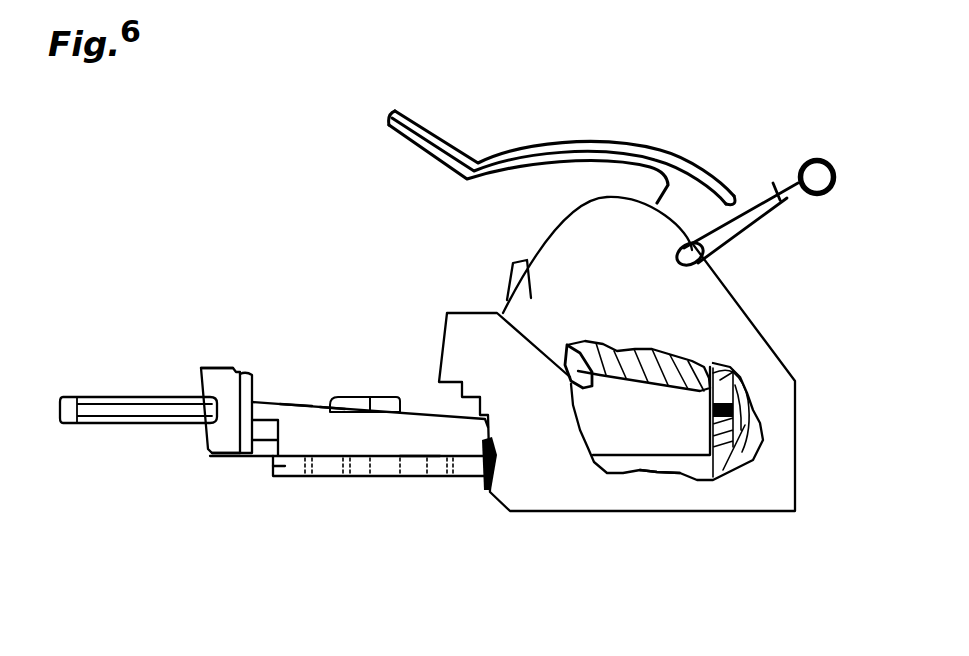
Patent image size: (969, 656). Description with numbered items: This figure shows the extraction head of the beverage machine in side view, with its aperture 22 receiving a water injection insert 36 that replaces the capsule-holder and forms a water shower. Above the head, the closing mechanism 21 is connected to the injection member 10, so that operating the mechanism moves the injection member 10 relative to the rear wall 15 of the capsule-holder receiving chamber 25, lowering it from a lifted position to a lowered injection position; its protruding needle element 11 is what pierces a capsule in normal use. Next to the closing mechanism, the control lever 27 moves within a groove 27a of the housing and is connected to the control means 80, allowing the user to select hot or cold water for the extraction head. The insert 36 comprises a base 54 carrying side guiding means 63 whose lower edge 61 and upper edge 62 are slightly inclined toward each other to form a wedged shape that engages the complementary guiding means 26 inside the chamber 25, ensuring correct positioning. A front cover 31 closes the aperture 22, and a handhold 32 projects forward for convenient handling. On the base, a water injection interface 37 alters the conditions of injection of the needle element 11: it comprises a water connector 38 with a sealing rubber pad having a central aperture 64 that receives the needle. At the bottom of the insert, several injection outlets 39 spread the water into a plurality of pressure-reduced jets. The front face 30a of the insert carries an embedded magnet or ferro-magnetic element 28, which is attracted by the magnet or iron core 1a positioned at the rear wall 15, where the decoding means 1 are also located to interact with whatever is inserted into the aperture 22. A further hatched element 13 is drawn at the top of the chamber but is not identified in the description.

The decoding means 1 is at (763, 447).
The magnet or iron core 1a is at (745, 398).
The injection member 10 is at (690, 363).
The needle element 11 is at (500, 313).
The hatched cap 13 is at (438, 343).
The rear wall 15 is at (735, 405).
The closing mechanism 21 is at (543, 148).
The aperture 22 is at (483, 417).
The capsule-holder receiving chamber 25 is at (628, 433).
The complementary guiding means 26 is at (662, 457).
The control lever 27 is at (777, 192).
The groove 27a is at (688, 245).
The magnet or ferro-magnetic element 28 is at (473, 463).
The front face 30a is at (483, 440).
The front cover 31 is at (213, 373).
The handhold 32 is at (123, 407).
The water injection insert 36 is at (211, 362).
The water injection interface 37 is at (305, 401).
The water connector 38 is at (342, 400).
The injection outlets 39 is at (367, 478).
The base 54 is at (247, 453).
The lower edge 61 is at (277, 463).
The upper edge 62 is at (261, 400).
The side guiding means 63 is at (420, 443).
The central aperture 64 is at (363, 396).
The control means 80 is at (707, 327).